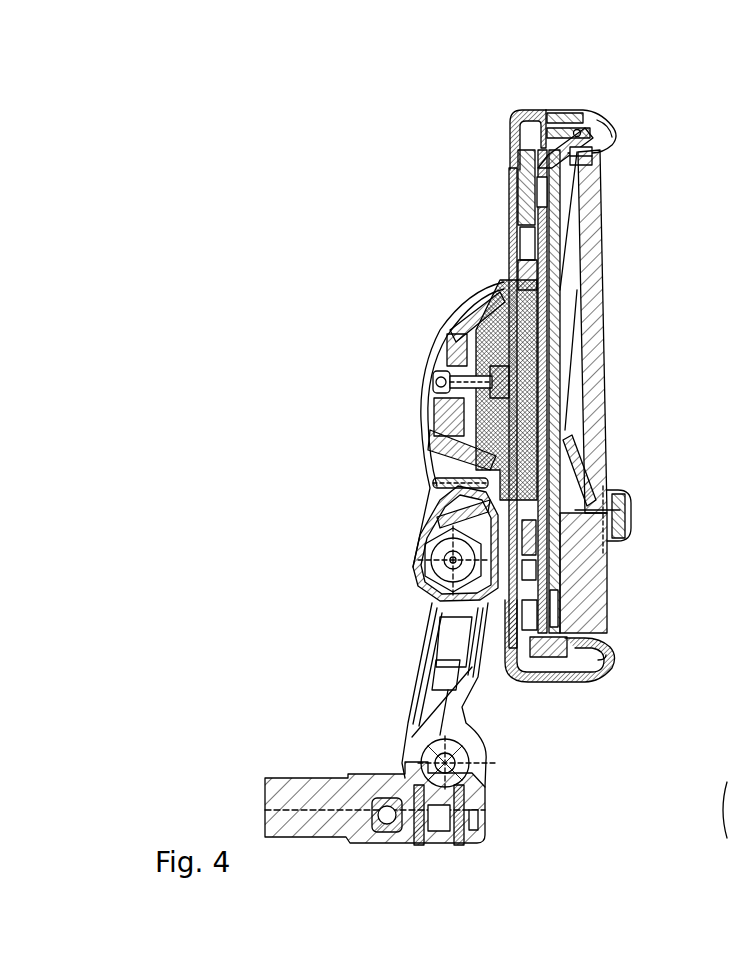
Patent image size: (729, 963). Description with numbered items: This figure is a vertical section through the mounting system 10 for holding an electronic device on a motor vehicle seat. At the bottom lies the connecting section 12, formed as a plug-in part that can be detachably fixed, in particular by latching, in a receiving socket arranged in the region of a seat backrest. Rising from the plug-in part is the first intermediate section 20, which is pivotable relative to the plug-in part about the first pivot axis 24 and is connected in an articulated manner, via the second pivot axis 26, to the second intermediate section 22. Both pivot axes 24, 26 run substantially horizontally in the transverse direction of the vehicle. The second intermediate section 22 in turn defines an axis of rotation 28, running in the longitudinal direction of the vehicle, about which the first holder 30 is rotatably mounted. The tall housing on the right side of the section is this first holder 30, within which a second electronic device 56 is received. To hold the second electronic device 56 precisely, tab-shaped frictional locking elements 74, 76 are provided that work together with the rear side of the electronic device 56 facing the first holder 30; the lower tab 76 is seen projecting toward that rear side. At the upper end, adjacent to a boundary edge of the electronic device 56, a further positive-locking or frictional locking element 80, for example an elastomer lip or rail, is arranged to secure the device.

The mounting system 10 is at (664, 86).
The connecting section 12 is at (474, 858).
The first intermediate section 20 is at (390, 690).
The second intermediate section 22 is at (396, 378).
The first pivot axis 24 is at (471, 766).
The second pivot axis 26 is at (428, 548).
The axis of rotation 28 is at (372, 392).
The first holder 30 is at (476, 158).
The second electronic device 56 is at (589, 336).
The frictional locking element 74 is at (573, 243).
The frictional locking element 76 is at (582, 458).
The frictional locking element 80 is at (583, 110).